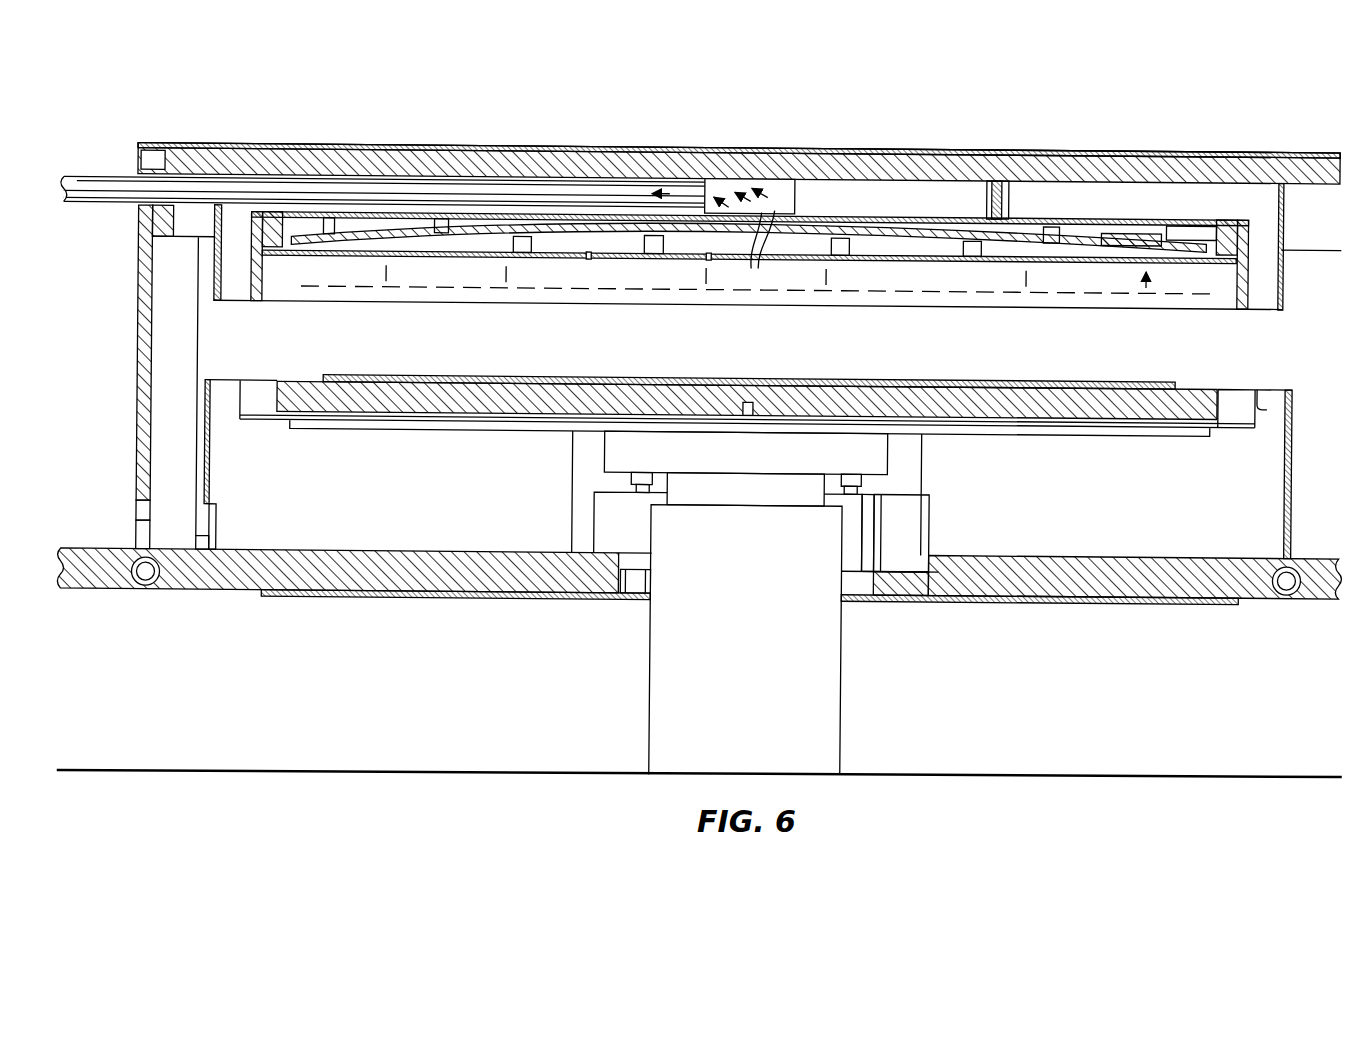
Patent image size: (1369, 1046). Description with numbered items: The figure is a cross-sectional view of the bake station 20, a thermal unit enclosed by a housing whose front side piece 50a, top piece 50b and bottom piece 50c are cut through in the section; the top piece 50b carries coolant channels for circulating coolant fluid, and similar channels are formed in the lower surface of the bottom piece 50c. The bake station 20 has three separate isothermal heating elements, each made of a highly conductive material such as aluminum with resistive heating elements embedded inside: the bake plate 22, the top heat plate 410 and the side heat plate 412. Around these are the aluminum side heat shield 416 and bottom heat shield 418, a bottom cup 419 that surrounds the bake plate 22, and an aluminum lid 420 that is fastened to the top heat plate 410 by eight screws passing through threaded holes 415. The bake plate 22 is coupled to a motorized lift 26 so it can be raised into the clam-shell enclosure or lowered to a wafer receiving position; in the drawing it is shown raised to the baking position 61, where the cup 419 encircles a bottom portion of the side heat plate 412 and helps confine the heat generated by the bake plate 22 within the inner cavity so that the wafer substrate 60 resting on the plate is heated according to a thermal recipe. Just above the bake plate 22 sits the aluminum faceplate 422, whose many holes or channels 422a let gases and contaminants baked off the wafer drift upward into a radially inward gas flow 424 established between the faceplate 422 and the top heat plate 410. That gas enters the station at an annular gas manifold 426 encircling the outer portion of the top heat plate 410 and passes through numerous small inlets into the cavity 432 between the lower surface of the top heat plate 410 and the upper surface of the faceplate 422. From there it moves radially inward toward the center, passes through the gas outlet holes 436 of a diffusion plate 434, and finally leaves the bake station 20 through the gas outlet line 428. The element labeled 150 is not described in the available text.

The bake station 20 is at (1266, 103).
The front side piece 50a is at (137, 374).
The top piece 50b is at (430, 148).
The bottom piece 50c is at (207, 582).
The gas outlet line 428 is at (120, 183).
The diffusion plate 434 is at (784, 212).
The lid 420 is at (873, 213).
The threaded holes 415 is at (1048, 226).
The top heat plate 410 is at (1117, 238).
The annular gas manifold 426 is at (1197, 223).
The radially inward gas flow 424 is at (622, 246).
The faceplate 422 is at (933, 260).
The holes or channels 422a is at (707, 261).
The gas outlet holes 436 is at (752, 251).
The cavity 432 is at (883, 240).
The side heat plate 412 is at (1247, 270).
The side heat shield 416 is at (1282, 303).
The baking position 61 is at (323, 288).
The wafer substrate 60 is at (973, 378).
The bake plate 22 is at (1193, 390).
The bottom cup 419 is at (1260, 386).
The bottom heat shield 418 is at (1293, 416).
The motorized lift 26 is at (815, 705).
The bottom liner plate 150 is at (1030, 605).